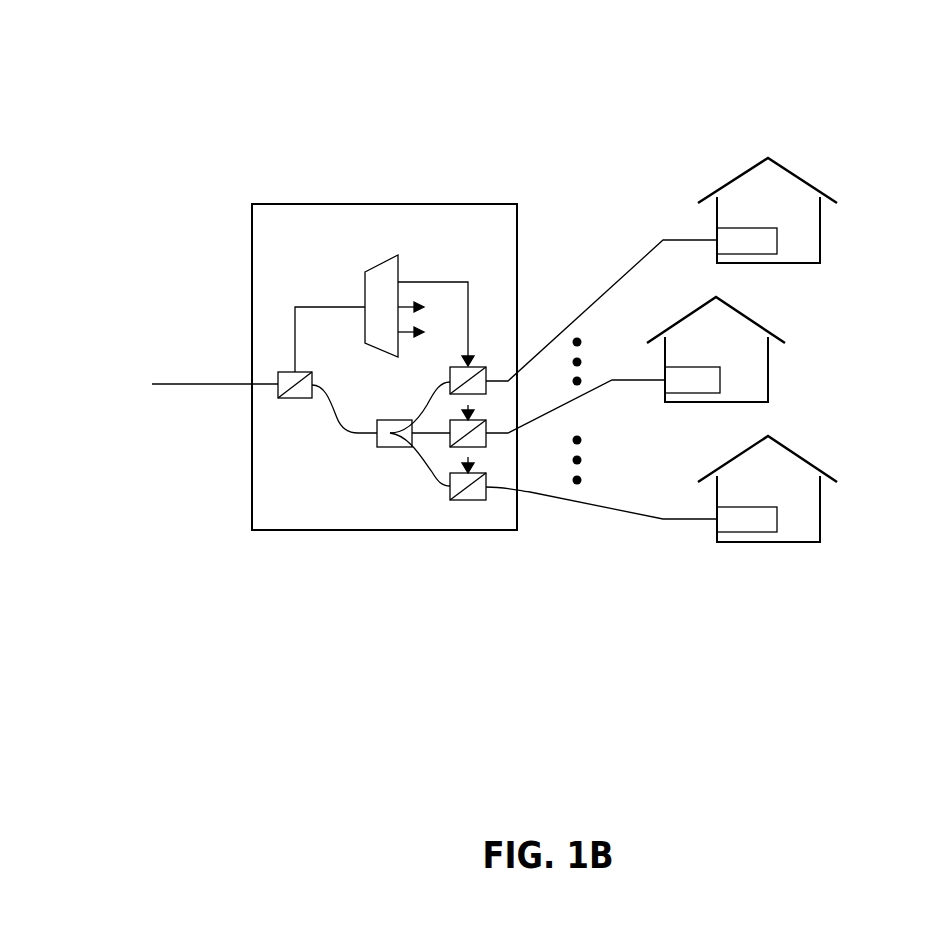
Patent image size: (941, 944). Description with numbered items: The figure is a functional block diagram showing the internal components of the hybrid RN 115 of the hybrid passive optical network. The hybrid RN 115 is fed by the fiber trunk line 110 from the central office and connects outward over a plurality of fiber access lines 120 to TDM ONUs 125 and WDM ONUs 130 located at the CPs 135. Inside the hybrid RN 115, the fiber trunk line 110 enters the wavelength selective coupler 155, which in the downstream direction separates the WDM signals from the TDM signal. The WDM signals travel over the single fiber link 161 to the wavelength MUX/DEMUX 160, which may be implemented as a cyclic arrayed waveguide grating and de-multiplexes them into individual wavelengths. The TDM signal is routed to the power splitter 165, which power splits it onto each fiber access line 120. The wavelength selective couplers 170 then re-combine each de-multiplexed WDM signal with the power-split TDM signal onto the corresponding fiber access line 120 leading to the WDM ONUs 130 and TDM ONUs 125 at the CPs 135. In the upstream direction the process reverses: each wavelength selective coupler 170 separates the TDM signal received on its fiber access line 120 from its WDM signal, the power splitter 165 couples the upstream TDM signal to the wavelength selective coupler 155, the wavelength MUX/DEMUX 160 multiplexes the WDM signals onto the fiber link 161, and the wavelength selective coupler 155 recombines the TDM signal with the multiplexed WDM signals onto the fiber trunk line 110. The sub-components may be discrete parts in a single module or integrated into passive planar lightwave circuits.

The fiber trunk line 110 is at (200, 384).
The hybrid RN 115 is at (293, 252).
The fiber access lines 120 is at (617, 578).
The TDM ONUs 125 is at (678, 393).
The WDM ONUs 130 is at (747, 254).
The CPs 135 is at (798, 205).
The wavelength selective coupler 155 is at (278, 392).
The wavelength multiplexer/demultiplexer 160 is at (366, 313).
The fiber link 161 is at (295, 330).
The power splitter 165 is at (388, 447).
The wavelength selective couplers 170 is at (482, 366).